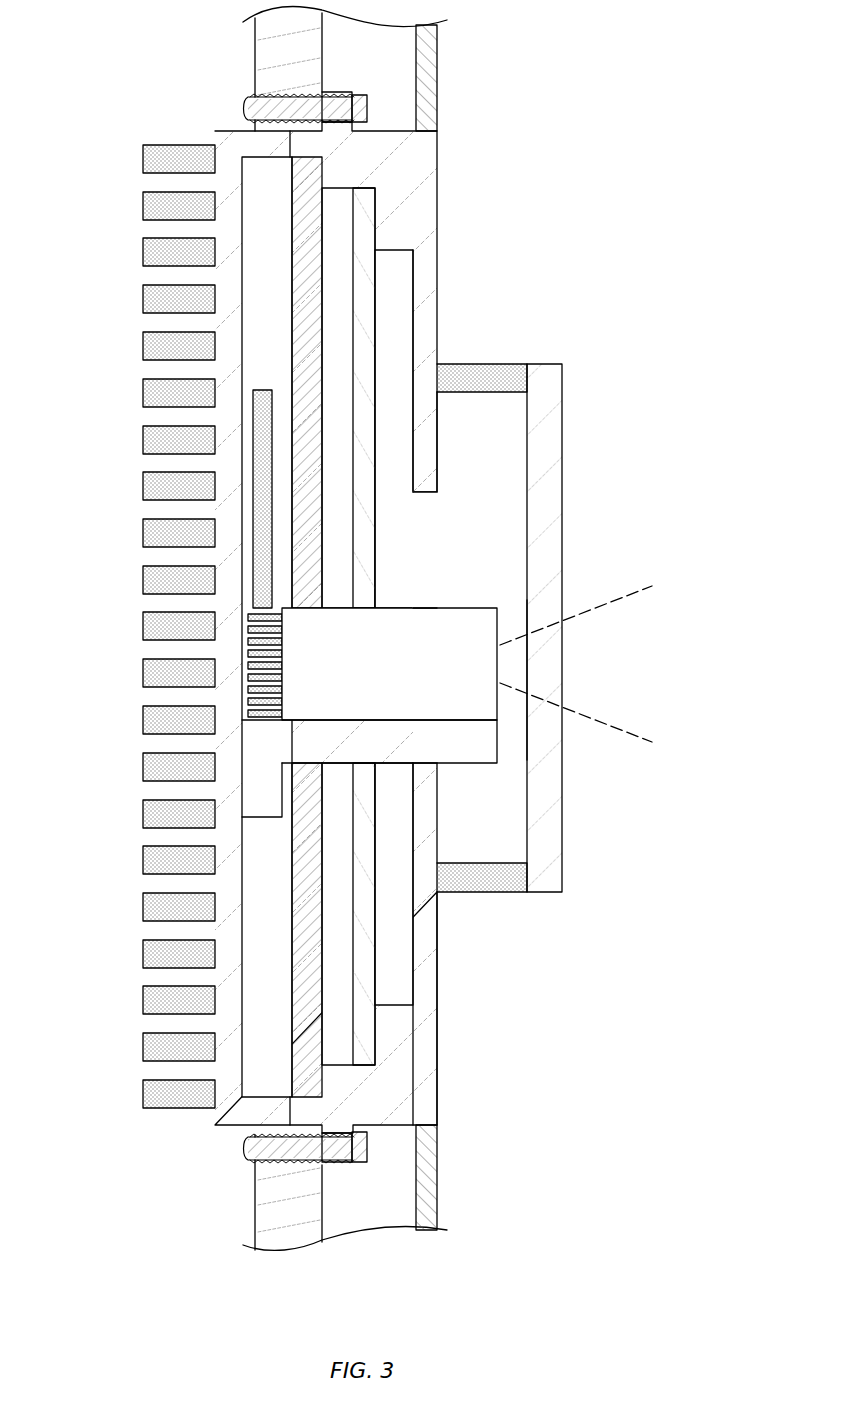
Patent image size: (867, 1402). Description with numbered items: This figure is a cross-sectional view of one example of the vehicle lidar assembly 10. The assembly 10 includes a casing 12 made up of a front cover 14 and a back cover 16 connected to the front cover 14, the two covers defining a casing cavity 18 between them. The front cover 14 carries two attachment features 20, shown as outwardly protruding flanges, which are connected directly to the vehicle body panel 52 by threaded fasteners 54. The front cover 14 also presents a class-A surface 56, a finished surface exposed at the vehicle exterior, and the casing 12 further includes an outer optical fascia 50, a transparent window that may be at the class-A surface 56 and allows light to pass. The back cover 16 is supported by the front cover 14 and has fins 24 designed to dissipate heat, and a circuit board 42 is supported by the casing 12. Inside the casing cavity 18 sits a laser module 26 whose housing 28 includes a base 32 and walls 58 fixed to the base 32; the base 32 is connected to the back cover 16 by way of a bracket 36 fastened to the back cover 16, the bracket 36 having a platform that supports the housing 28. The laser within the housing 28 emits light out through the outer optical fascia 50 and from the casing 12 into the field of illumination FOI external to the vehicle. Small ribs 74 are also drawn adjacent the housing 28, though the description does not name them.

The vehicle lidar assembly 10 is at (433, 628).
The casing 12 is at (433, 628).
The front cover 14 is at (438, 180).
The back cover 16 is at (225, 131).
The casing cavity 18 is at (445, 535).
The attachment feature 20 is at (358, 96).
The fins 24 is at (142, 1046).
The laser module 26 is at (474, 590).
The housing 28 is at (401, 608).
The base 32 is at (497, 708).
The bracket 36 is at (242, 786).
The circuit board 42 is at (255, 458).
The outer optical fascia 50 is at (563, 405).
The vehicle body panel 52 is at (255, 1200).
The threaded fasteners 54 is at (368, 110).
The class-A surface 56 is at (437, 1037).
The walls 58 is at (500, 633).
The heat sink ribs 74 is at (248, 680).
The field of illumination FOI is at (633, 737).